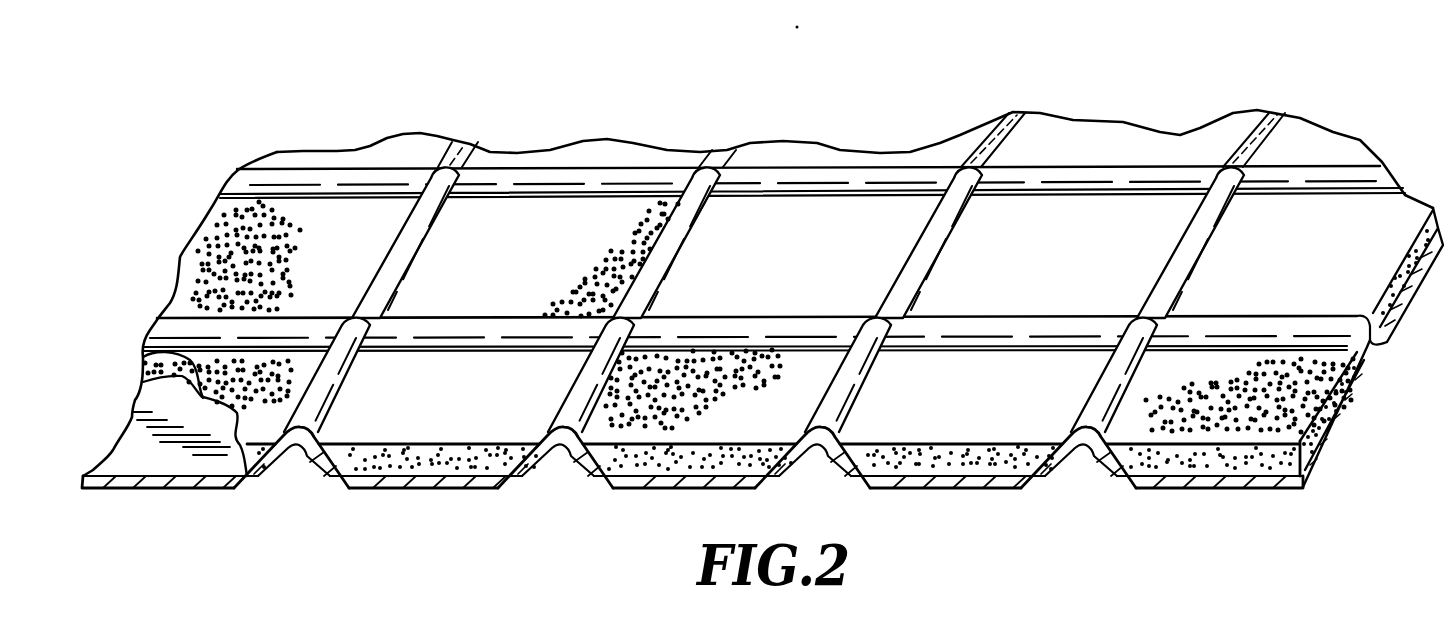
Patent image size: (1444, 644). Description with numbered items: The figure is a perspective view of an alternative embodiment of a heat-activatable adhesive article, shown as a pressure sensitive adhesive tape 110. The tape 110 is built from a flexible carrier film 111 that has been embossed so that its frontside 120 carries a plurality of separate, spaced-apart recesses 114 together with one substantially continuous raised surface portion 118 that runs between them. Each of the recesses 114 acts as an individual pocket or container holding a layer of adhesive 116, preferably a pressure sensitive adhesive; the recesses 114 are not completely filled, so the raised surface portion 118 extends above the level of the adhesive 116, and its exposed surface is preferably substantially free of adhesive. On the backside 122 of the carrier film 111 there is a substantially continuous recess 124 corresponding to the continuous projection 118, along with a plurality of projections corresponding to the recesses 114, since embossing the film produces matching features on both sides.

The pressure sensitive adhesive tape 110 is at (1082, 79).
The flexible carrier film 111 is at (1147, 491).
The recesses 114 is at (867, 470).
The layer of adhesive 116 is at (1081, 264).
The continuous raised surface portion 118 is at (1343, 173).
The frontside 120 is at (160, 400).
The backside 122 is at (923, 489).
The continuous recess 124 is at (299, 455).